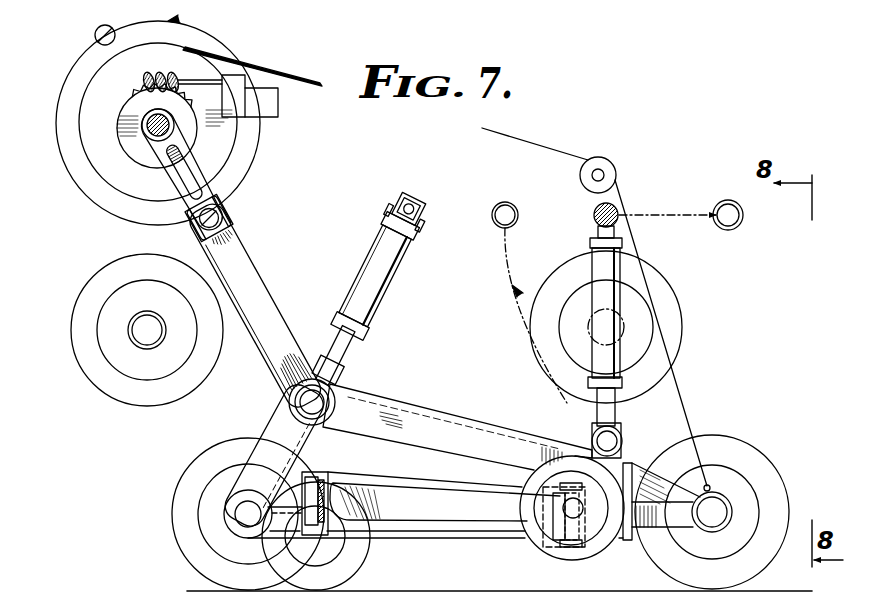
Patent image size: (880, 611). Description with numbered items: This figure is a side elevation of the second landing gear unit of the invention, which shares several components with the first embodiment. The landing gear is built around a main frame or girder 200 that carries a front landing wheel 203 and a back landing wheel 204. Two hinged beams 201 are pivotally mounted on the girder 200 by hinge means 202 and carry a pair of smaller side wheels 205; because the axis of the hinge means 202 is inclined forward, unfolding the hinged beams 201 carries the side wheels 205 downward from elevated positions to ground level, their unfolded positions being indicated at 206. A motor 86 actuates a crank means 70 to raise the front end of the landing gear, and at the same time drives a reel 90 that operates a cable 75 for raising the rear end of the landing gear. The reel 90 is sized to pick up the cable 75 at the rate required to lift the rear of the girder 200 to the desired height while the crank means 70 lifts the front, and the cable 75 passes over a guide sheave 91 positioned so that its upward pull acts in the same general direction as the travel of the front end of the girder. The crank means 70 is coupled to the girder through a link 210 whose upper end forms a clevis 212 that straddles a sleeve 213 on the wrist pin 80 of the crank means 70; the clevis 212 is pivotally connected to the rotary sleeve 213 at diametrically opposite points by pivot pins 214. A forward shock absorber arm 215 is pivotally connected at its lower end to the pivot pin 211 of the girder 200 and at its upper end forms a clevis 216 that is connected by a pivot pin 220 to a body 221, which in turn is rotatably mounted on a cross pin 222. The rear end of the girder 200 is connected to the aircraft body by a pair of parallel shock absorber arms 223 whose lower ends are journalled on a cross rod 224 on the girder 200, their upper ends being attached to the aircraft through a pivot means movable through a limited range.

The crank means 70 is at (170, 156).
The cable 75 is at (255, 64).
The crank pin 80 is at (184, 220).
The motor 86 is at (268, 103).
The reel 90 is at (226, 156).
The guide sheave 91 is at (614, 166).
The girder 200 is at (453, 412).
The hinged beams 201 is at (437, 478).
The hinge means 202 is at (335, 489).
The front landing wheel 203 is at (188, 422).
The back landing wheel 204 is at (680, 352).
The side wheels 205 is at (572, 521).
The unfolded positions of the side wheels 206 is at (362, 565).
The link 210 is at (257, 365).
The pivot pin 211 is at (328, 398).
The clevis 212 is at (224, 222).
The sleeve 213 is at (218, 194).
The pivot pins 214 is at (226, 204).
The forward shock absorber arm 215 is at (382, 301).
The clevis 216 is at (588, 301).
The pivot pin 220 is at (434, 226).
The body 221 is at (421, 192).
The cross pin 222 is at (430, 206).
The shock absorber arms 223 is at (635, 314).
The cross rod 224 is at (633, 437).